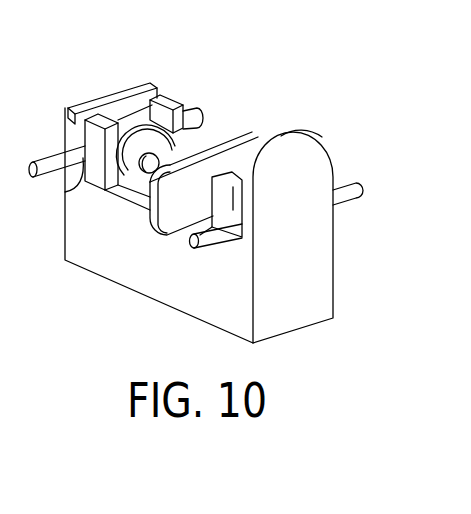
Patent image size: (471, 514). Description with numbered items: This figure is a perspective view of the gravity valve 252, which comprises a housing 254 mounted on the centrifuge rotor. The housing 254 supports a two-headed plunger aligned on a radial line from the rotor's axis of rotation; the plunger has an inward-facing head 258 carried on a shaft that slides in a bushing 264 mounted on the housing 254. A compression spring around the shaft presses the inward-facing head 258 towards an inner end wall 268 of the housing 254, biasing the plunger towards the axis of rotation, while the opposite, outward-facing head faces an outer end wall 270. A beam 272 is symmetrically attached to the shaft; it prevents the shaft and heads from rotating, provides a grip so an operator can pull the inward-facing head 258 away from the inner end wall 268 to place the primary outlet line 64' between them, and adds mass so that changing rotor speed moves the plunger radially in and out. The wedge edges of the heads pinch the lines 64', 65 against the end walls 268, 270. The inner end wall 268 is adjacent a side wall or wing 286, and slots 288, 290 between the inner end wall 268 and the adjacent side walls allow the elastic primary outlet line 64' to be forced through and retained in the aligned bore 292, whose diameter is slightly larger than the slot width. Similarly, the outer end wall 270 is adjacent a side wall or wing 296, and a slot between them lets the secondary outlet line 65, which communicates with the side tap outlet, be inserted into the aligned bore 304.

The gravity valve 252 is at (366, 258).
The housing 254 is at (103, 267).
The inward-facing head 258 is at (168, 108).
The bushing 264 is at (207, 142).
The inner end wall 268 is at (140, 90).
The outer end wall 270 is at (317, 143).
The beam 272 is at (177, 240).
The side wall or wing 286 is at (100, 122).
The slot 288 is at (80, 130).
The slot 290 is at (152, 118).
The bore 292 is at (65, 199).
The side wall or wing 296 is at (228, 200).
The bore 304 is at (242, 237).
The primary outlet line 64' is at (213, 111).
The line 65 is at (347, 183).